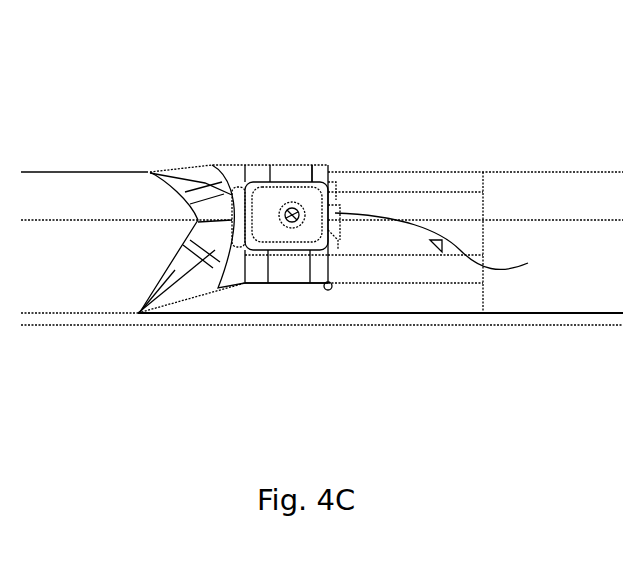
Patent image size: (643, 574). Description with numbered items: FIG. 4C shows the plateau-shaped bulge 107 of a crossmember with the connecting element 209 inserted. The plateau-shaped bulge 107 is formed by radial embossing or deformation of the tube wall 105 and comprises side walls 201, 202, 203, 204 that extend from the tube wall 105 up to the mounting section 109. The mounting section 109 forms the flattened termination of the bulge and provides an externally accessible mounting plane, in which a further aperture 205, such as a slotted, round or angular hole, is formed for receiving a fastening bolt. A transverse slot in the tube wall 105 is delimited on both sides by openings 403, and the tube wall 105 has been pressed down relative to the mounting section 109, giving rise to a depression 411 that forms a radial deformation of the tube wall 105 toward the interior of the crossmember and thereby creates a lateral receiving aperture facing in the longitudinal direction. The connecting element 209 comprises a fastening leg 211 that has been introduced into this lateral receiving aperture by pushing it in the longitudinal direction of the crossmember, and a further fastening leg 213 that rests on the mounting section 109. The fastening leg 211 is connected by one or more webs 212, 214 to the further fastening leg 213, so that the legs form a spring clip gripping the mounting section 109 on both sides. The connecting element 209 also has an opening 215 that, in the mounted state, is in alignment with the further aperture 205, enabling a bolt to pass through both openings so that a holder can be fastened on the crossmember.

The tube wall 105 is at (47, 298).
The plateau-shaped bulge 107 is at (445, 335).
The mounting section 109 is at (292, 193).
The side wall 201 is at (297, 300).
The side wall 202 is at (170, 275).
The side wall 203 is at (237, 175).
The side wall 204 is at (202, 228).
The further aperture 205 is at (268, 193).
The connecting element 209 is at (315, 183).
The fastening leg 211 is at (330, 208).
The web 212 is at (336, 193).
The further fastening leg 213 is at (240, 188).
The web 214 is at (334, 237).
The opening 215 is at (280, 210).
The opening 403 is at (328, 290).
The depression 411 is at (454, 243).